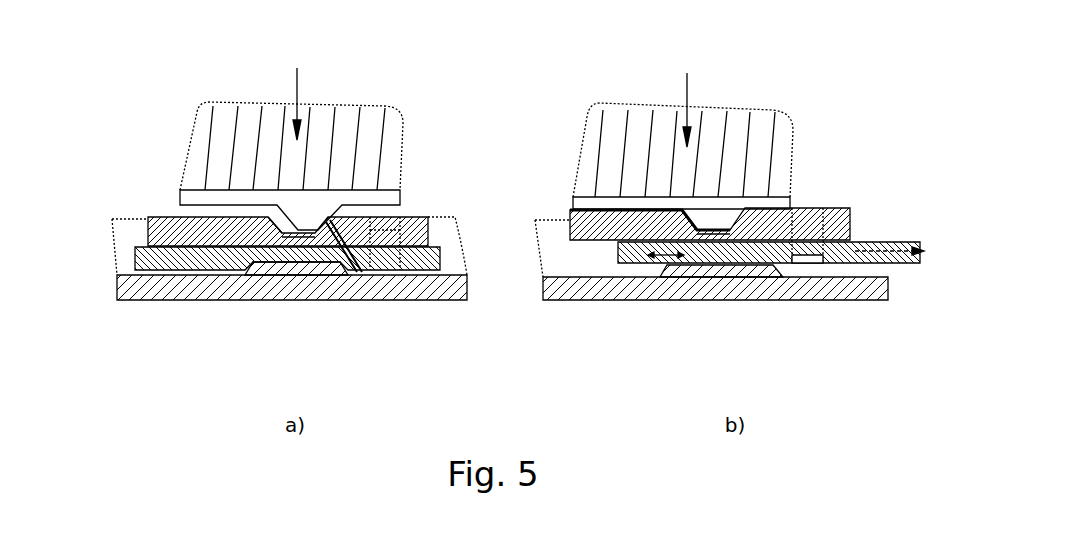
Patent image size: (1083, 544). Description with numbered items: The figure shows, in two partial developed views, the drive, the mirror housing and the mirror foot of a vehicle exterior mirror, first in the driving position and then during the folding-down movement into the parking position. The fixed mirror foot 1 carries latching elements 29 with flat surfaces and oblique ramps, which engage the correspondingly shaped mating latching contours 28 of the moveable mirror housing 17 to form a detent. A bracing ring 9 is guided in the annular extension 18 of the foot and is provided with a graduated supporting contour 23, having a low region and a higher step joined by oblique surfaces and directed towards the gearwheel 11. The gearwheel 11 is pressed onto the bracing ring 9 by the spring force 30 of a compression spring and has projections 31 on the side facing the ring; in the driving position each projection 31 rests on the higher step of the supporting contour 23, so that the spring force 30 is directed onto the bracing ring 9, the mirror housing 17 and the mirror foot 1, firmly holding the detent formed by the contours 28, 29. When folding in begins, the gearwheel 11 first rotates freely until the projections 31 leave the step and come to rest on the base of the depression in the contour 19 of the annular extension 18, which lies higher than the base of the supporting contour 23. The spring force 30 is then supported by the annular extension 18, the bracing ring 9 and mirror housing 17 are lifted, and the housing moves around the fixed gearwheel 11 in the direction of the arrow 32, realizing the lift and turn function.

The mirror foot 1 is at (148, 287).
The bracing ring 9 is at (410, 230).
The gearwheel 11 is at (345, 120).
The mirror housing 17 is at (425, 263).
The annular extension 18 is at (443, 228).
The contour 19 is at (292, 215).
The supporting contour 23 is at (360, 268).
The mating latching contour 28 is at (275, 252).
The latching element 29 is at (302, 272).
The spring force 30 is at (506, 105).
The projection 31 is at (333, 212).
The arrow 32 is at (884, 250).